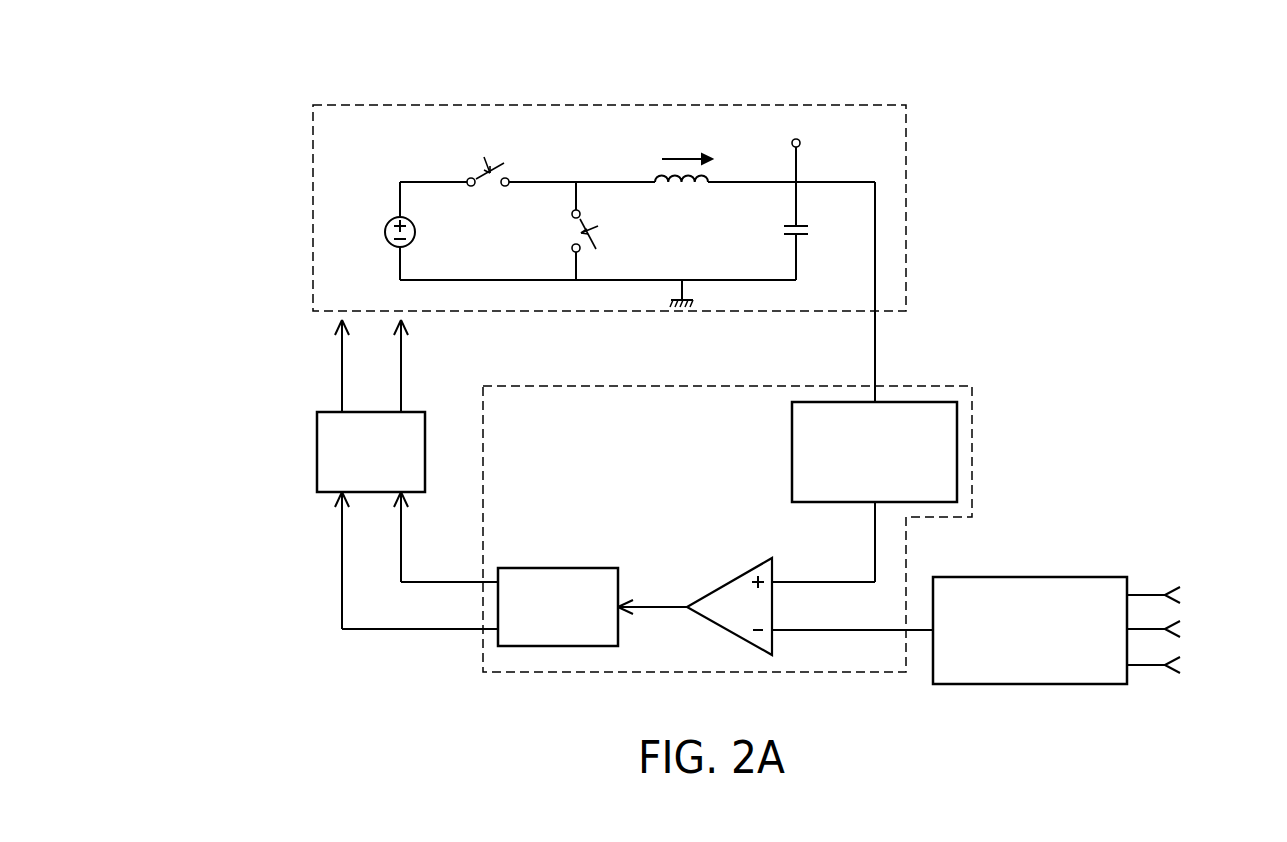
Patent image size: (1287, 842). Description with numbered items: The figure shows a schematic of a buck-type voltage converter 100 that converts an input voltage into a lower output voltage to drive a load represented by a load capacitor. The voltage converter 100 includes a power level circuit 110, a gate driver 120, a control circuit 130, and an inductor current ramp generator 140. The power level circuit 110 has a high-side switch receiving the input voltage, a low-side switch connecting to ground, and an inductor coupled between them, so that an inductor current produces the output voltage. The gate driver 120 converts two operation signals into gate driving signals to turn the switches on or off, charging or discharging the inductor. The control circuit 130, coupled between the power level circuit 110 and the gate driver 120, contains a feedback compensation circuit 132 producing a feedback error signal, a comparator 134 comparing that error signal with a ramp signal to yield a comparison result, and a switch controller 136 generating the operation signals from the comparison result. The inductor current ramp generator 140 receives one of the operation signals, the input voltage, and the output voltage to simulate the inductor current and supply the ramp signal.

The voltage converter 100 is at (210, 75).
The power level circuit 110 is at (612, 104).
The gate driver 120 is at (317, 450).
The control circuit 130 is at (715, 385).
The feedback compensation circuit 132 is at (792, 450).
The comparator 134 is at (735, 578).
The switch controller 136 is at (561, 567).
The inductor current ramp generator 140 is at (1037, 576).